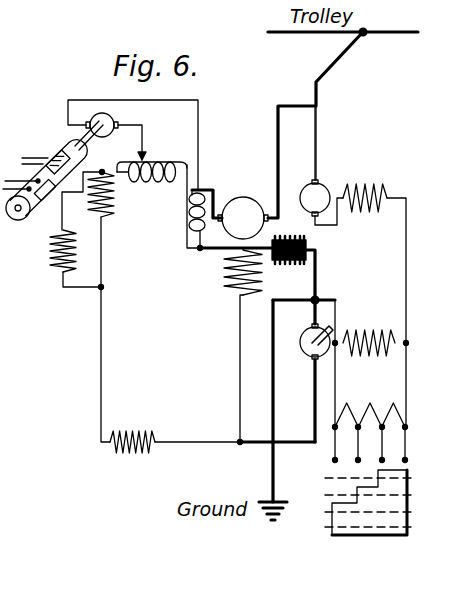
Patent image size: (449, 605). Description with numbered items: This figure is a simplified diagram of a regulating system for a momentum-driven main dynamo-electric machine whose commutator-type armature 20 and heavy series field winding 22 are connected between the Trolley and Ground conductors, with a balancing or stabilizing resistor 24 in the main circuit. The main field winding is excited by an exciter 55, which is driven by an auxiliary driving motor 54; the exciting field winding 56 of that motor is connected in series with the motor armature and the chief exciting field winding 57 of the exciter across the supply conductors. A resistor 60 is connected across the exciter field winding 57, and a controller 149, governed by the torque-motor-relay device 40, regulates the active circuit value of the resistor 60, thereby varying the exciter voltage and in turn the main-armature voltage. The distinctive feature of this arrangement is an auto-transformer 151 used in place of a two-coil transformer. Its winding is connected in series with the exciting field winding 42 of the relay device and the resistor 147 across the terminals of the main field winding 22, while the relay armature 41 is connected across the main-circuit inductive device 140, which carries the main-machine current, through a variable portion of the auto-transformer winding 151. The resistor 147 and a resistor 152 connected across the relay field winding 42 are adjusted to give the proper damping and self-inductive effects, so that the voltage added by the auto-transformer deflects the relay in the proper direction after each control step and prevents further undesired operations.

The torque-motor-relay device 40 is at (45, 171).
The relay armature 41 is at (112, 121).
The auto-transformer 151 is at (154, 161).
The exciting field winding for the torque relay device 42 is at (114, 213).
The inductive device 140 is at (188, 234).
The resistor 152 is at (50, 265).
The armature 20 is at (251, 203).
The auxiliary driving motor 54 is at (309, 190).
The exciting field winding 56 is at (371, 188).
The stabilizing resistor 24 is at (308, 247).
The field winding 22 is at (240, 294).
The exciter 55 is at (304, 336).
The exciting field winding for the exciter 57 is at (370, 336).
The resistor 60 is at (368, 407).
The resistor 147 is at (131, 451).
The controller 149 is at (368, 535).